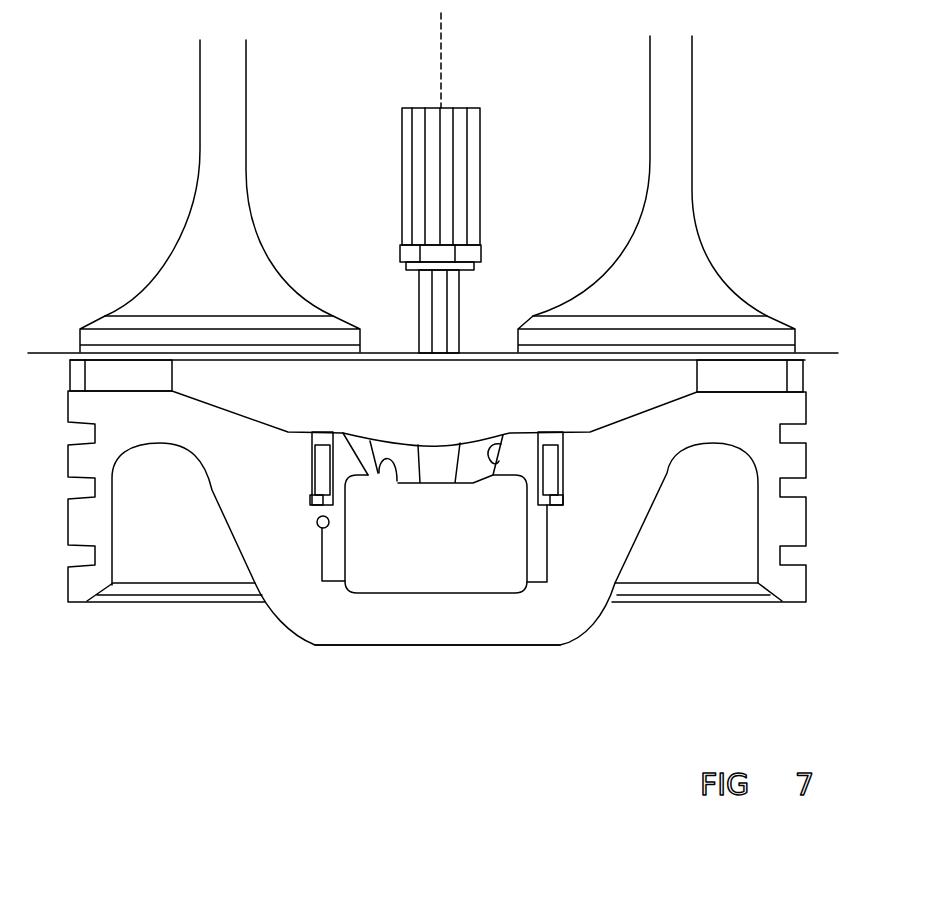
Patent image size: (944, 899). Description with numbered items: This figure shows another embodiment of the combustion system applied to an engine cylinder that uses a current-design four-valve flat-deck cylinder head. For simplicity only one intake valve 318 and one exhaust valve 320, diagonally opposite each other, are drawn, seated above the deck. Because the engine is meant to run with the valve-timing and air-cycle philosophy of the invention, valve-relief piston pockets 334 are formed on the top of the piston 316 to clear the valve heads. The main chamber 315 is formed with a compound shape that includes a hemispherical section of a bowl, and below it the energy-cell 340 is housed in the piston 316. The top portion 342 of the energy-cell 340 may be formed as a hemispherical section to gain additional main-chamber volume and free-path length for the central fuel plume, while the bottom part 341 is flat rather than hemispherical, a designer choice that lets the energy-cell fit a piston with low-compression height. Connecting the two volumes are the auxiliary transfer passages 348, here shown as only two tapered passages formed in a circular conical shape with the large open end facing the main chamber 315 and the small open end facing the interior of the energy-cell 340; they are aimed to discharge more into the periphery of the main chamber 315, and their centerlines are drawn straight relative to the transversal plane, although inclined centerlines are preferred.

The main chamber 315 is at (280, 399).
The piston 316 is at (735, 618).
The intake valve 318 is at (697, 228).
The exhaust valve 320 is at (270, 248).
The valve-relief piston pocket 334 is at (123, 386).
The energy-cell 340 is at (390, 432).
The bottom part of the energy-cell 341 is at (425, 593).
The top portion of the energy-cell 342 is at (473, 440).
The auxiliary transfer passages 348 is at (492, 436).